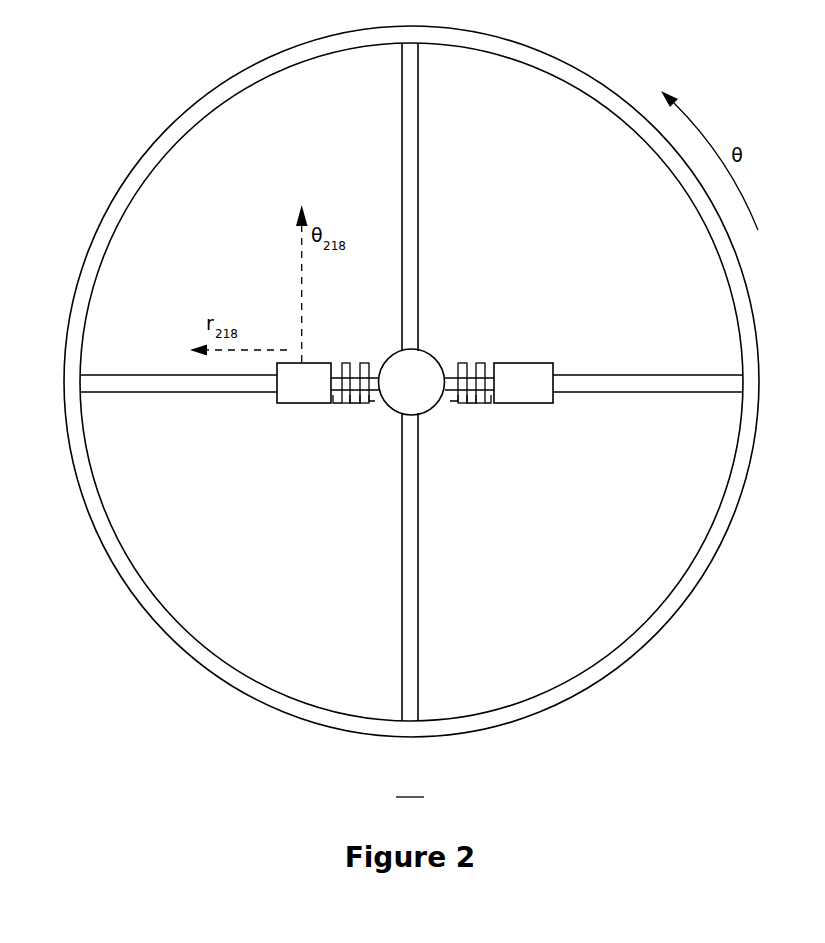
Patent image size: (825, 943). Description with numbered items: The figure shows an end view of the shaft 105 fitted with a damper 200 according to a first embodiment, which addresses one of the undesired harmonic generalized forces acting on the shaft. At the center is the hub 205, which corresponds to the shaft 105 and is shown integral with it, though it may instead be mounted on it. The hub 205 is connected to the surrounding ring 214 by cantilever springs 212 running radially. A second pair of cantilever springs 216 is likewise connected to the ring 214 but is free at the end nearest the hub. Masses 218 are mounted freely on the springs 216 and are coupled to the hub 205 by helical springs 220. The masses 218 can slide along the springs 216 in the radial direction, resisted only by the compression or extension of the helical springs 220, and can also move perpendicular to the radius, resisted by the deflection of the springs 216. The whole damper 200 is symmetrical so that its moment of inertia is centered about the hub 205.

The shaft 105 is at (442, 722).
The damper 200 is at (410, 786).
The hub 205 is at (412, 382).
The cantilever springs 212 is at (418, 155).
The ring 214 is at (175, 620).
The cantilever springs 216 is at (205, 393).
The masses 218 is at (415, 383).
The helical springs 220 is at (352, 405).